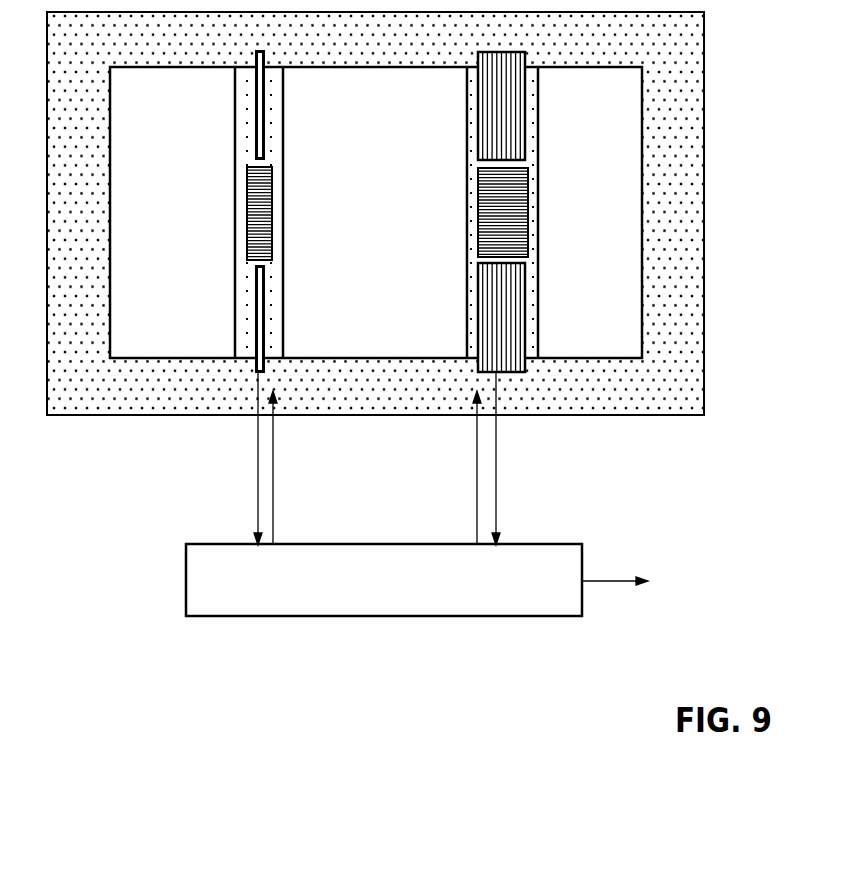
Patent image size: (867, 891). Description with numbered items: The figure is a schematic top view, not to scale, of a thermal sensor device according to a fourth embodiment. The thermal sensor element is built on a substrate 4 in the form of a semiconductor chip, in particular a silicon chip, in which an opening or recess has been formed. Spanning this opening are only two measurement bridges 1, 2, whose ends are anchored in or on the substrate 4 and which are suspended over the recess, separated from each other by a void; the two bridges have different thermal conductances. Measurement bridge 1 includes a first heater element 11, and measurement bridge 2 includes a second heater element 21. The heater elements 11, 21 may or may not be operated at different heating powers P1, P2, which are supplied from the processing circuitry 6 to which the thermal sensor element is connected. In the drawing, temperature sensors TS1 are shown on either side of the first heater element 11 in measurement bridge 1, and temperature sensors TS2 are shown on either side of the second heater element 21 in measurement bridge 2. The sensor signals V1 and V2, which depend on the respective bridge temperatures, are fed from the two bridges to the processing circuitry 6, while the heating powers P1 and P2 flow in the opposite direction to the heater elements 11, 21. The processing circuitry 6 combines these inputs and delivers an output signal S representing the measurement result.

The substrate 4 is at (692, 50).
The measurement bridge 1 is at (236, 223).
The first heater element 11 is at (248, 180).
The first temperature sensor TS1 is at (259, 128).
The measurement bridge 2 is at (468, 224).
The second heater element 21 is at (485, 180).
The second temperature sensor TS2 is at (497, 128).
The processing circuitry 6 is at (396, 597).
The output signal S is at (631, 561).
The first sensor voltage V1(T1) V1 is at (215, 458).
The heating power P1 is at (289, 467).
The heating power P2 is at (460, 467).
The second sensor voltage V2(T2) V2 is at (527, 458).